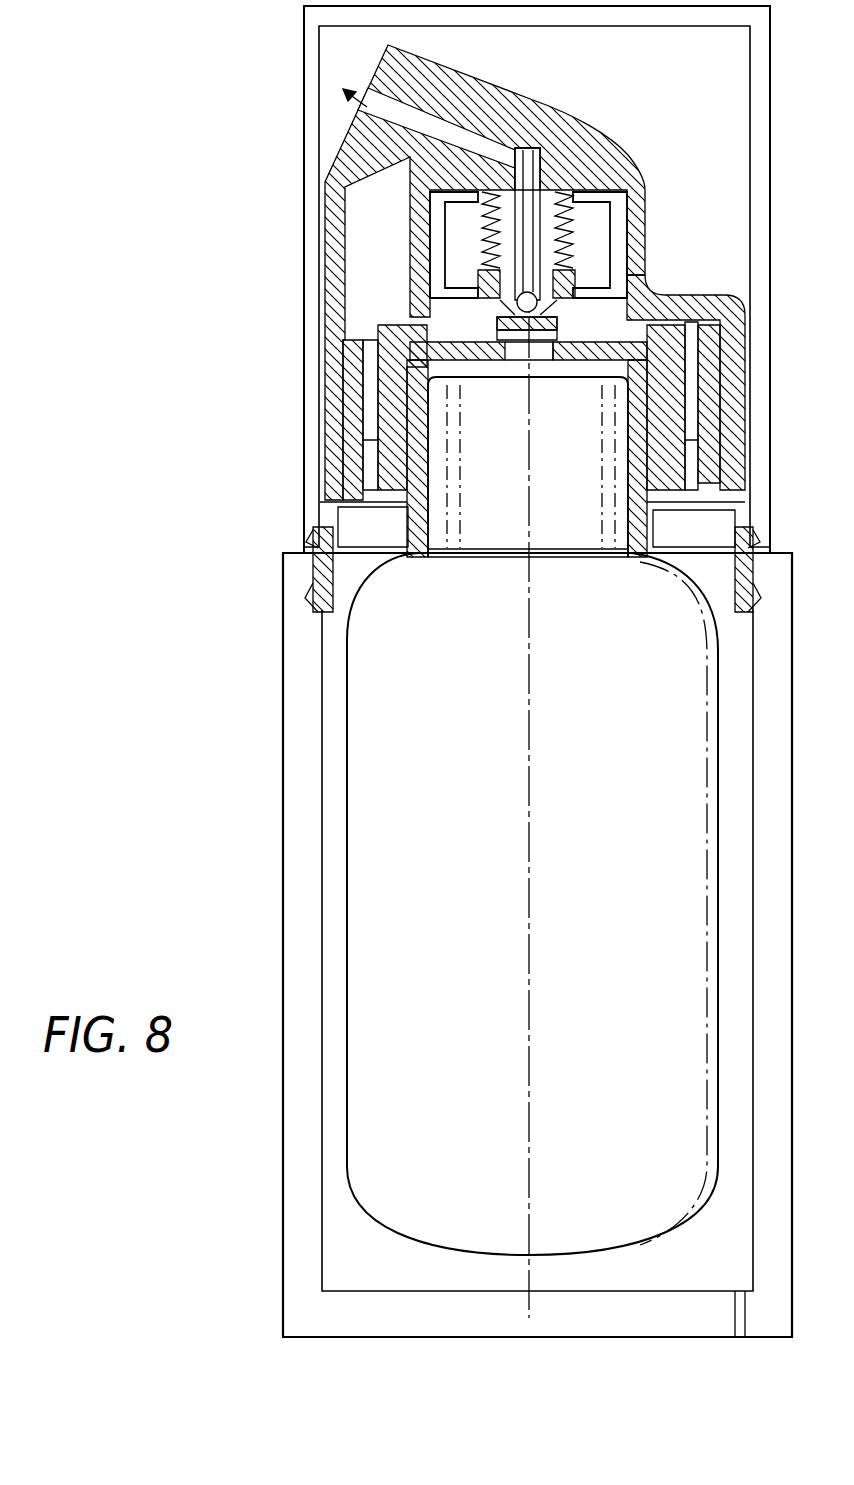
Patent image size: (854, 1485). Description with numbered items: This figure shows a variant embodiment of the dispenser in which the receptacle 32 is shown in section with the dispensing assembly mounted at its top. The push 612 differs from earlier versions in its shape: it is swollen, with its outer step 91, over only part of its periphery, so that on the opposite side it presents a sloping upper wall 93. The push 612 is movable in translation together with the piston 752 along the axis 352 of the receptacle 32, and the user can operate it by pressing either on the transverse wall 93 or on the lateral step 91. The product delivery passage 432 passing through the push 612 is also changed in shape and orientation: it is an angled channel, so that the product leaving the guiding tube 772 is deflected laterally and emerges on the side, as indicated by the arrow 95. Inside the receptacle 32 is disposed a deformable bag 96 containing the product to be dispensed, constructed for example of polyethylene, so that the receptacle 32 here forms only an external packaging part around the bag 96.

The receptacle 32 is at (287, 668).
The deformable bag 96 is at (290, 781).
The axis 352 is at (530, 672).
The push 612 is at (643, 147).
The outer step 91 is at (697, 296).
The arrow 95 is at (378, 84).
The sloping upper wall 93 is at (527, 107).
The product delivery passage 432 is at (540, 110).
The guiding tube 772 is at (470, 232).
The piston 752 is at (452, 372).